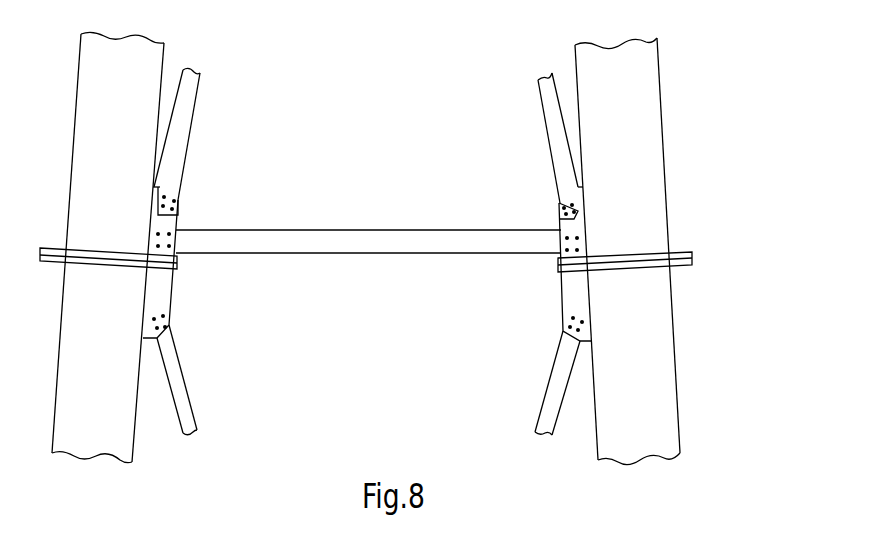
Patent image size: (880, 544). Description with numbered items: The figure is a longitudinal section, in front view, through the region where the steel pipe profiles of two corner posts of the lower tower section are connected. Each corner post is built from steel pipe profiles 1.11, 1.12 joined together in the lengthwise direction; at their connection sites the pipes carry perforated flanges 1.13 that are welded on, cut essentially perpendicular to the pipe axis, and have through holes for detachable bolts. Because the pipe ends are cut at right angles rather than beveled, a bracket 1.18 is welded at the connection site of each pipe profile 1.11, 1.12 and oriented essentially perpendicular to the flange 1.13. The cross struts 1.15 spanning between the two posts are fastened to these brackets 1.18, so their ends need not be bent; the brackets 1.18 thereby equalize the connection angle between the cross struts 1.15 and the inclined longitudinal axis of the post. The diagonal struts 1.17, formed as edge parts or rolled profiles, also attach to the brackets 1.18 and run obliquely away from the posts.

The steel pipe profile 1.11 is at (655, 382).
The steel pipe profile 1.12 is at (640, 113).
The perforated flange 1.13 is at (683, 252).
The cross strut 1.15 is at (413, 242).
The diagonal strut 1.17 is at (557, 137).
The bracket 1.18 is at (562, 228).